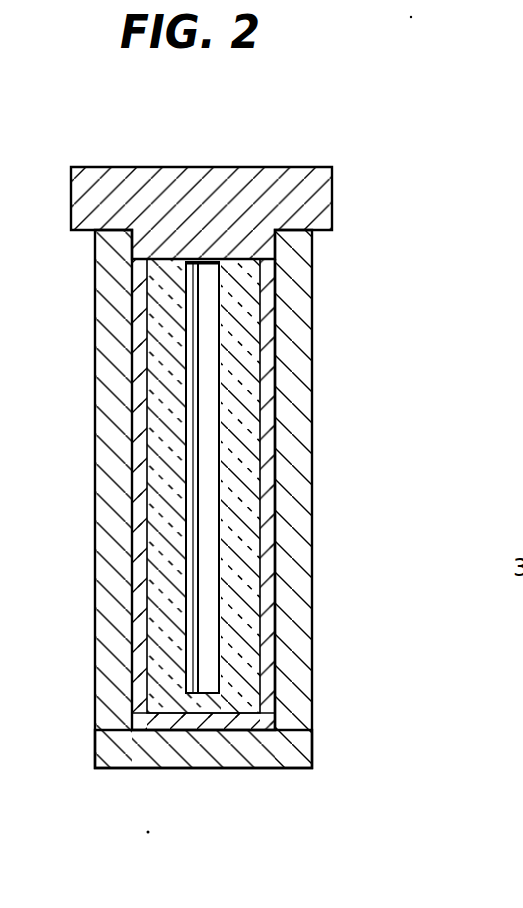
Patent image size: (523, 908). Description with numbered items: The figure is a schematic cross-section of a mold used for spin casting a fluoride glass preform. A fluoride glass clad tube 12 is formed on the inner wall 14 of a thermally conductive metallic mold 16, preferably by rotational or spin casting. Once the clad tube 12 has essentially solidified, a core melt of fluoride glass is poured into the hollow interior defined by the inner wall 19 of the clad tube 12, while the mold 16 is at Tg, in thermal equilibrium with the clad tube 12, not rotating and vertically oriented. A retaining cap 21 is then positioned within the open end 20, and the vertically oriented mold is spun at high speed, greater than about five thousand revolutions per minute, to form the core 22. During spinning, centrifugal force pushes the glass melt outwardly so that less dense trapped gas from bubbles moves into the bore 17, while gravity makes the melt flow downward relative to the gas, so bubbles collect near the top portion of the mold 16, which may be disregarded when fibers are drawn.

The fluoride glass clad tube 12 is at (267, 713).
The inner wall of mold 14 is at (274, 367).
The thermally conductive metallic mold 16 is at (297, 473).
The bore 17 is at (207, 550).
The inner wall of clad tube 19 is at (213, 732).
The open end 20 is at (268, 253).
The retaining cap 21 is at (238, 167).
The core 22 is at (247, 632).